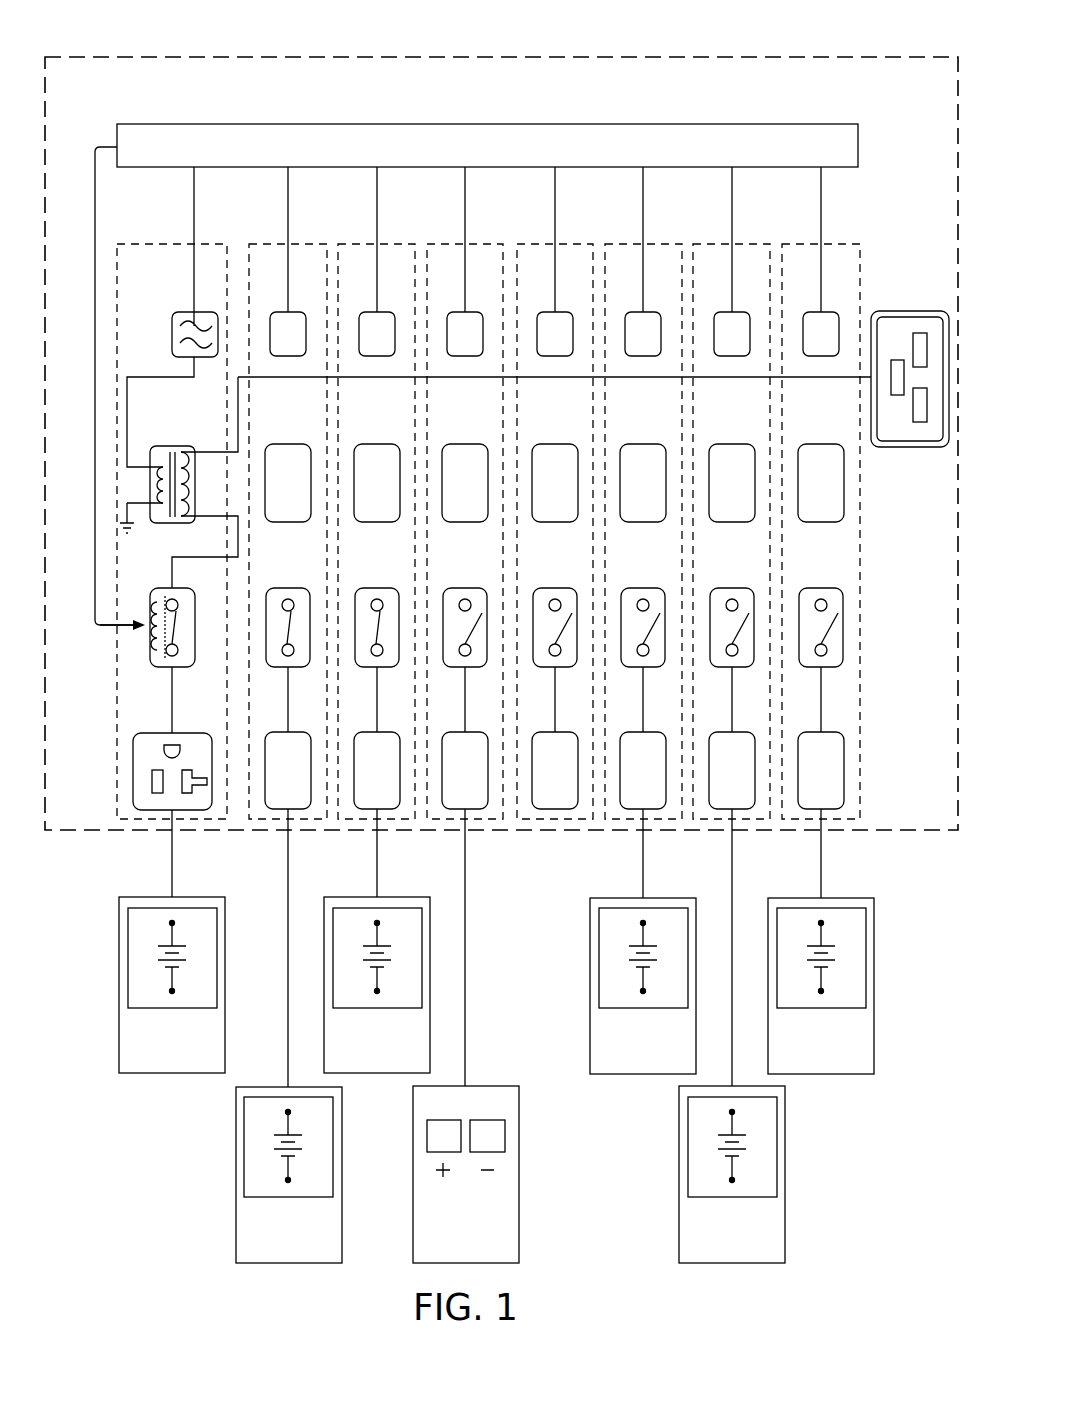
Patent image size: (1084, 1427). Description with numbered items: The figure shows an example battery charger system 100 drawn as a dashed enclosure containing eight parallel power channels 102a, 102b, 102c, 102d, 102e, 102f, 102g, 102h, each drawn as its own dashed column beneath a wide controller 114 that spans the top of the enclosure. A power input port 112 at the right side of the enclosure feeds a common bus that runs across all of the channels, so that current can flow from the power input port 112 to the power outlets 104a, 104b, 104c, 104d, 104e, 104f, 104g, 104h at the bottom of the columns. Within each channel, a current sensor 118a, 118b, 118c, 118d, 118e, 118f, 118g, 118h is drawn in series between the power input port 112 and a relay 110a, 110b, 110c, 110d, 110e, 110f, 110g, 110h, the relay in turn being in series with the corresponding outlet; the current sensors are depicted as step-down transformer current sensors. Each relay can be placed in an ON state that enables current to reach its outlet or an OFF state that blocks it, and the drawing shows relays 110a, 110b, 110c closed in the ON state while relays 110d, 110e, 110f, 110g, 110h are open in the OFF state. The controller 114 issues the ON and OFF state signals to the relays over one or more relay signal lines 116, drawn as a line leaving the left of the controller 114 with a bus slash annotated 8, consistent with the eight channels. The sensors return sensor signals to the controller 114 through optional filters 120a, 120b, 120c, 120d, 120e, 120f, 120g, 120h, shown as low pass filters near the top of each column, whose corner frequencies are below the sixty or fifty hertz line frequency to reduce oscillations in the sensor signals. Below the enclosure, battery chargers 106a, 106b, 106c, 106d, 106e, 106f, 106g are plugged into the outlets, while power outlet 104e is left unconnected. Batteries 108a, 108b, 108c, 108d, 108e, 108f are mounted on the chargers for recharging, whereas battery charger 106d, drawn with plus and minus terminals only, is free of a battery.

The battery charger system 100 is at (339, 52).
The controller 114 is at (488, 124).
The control line 8 is at (106, 375).
The relay signal lines 116 is at (110, 627).
The power input port 112 is at (912, 311).
The power channel 102a is at (166, 236).
The power channel 102b is at (257, 236).
The power channel 102c is at (346, 236).
The power channel 102d is at (434, 236).
The power channel 102e is at (586, 236).
The power channel 102f is at (676, 236).
The power channel 102g is at (764, 236).
The power channel 102h is at (851, 236).
The filter 120a is at (172, 330).
The filter 120b is at (283, 312).
The filter 120c is at (372, 312).
The filter 120d is at (460, 312).
The filter 120e is at (555, 312).
The filter 120f is at (643, 312).
The filter 120g is at (732, 312).
The filter 120h is at (821, 312).
The current sensor 118a is at (172, 446).
The current sensor 118b is at (283, 444).
The current sensor 118c is at (372, 444).
The current sensor 118d is at (460, 444).
The current sensor 118e is at (555, 444).
The current sensor 118f is at (643, 444).
The current sensor 118g is at (732, 444).
The current sensor 118h is at (821, 444).
The relay 110a is at (160, 588).
The relay 110b is at (283, 588).
The relay 110c is at (372, 588).
The relay 110d is at (460, 588).
The relay 110e is at (555, 588).
The relay 110f is at (643, 588).
The relay 110g is at (732, 588).
The relay 110h is at (821, 588).
The power outlet 104a is at (133, 770).
The power outlet 104b is at (265, 794).
The power outlet 104c is at (372, 732).
The power outlet 104d is at (460, 732).
The power outlet 104e is at (555, 732).
The power outlet 104f is at (643, 732).
The power outlet 104g is at (732, 732).
The power outlet 104h is at (821, 732).
The battery charger 106a is at (158, 1075).
The battery charger 106b is at (272, 1265).
The battery charger 106c is at (364, 896).
The battery charger 106d is at (519, 1173).
The battery charger 106e is at (673, 897).
The battery charger 106f is at (759, 1266).
The battery charger 106g is at (840, 1076).
The battery 108a is at (165, 1010).
The battery 108b is at (281, 1199).
The battery 108c is at (370, 1010).
The battery 108d is at (650, 1010).
The battery 108e is at (741, 1199).
The battery 108f is at (828, 1010).